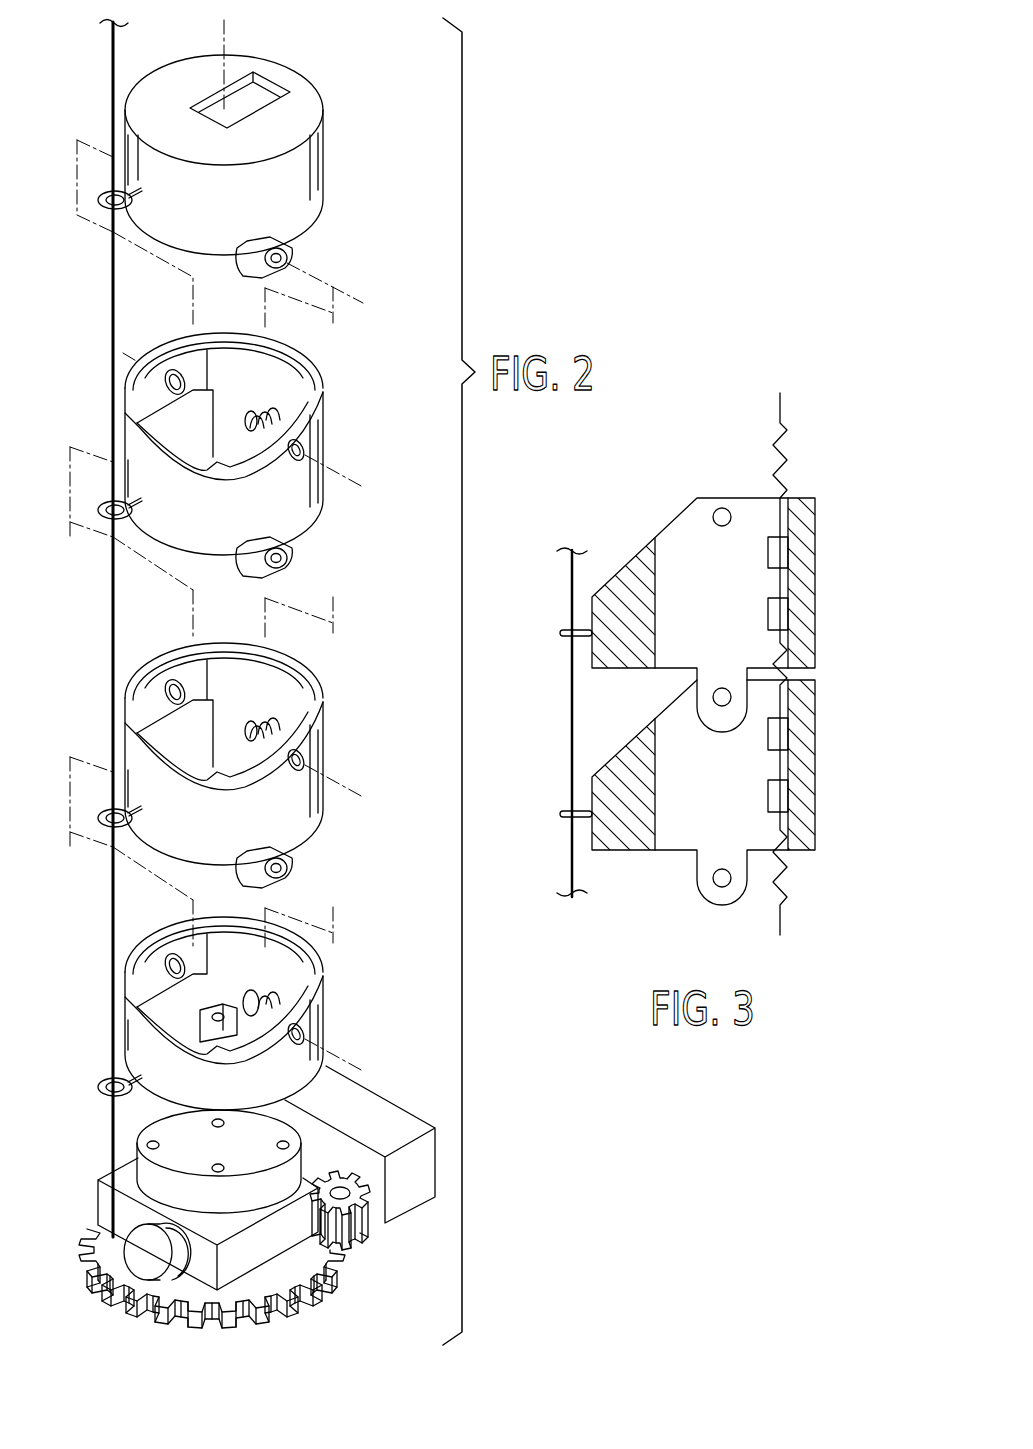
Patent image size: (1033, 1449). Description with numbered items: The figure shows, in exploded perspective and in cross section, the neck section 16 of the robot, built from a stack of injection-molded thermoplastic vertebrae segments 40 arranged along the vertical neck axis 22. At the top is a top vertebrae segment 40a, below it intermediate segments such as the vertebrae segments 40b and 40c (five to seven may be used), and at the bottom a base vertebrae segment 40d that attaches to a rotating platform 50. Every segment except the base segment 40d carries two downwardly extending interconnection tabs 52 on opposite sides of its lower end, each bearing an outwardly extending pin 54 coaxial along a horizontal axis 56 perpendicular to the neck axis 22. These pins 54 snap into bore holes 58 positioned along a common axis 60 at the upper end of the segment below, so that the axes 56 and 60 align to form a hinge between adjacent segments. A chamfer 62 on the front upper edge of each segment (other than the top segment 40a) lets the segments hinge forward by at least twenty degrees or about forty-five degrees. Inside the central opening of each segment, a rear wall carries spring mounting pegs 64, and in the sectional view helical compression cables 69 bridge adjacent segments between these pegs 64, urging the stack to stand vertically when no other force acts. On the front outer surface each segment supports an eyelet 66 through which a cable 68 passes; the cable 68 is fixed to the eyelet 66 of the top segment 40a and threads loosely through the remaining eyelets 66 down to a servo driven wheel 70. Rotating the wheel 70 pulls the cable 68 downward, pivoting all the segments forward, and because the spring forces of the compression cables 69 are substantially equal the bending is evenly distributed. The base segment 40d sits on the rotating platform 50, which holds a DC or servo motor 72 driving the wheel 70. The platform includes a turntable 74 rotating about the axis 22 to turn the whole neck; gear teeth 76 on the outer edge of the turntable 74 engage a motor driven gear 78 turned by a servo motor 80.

In FIG. 2, the neck section 16 is at (353, 210).
In FIG. 2, the neck axis 22 is at (224, 40).
In FIG. 3, the vertebrae segments 40 is at (805, 580).
In FIG. 2, the top vertebrae segment 40a is at (302, 177).
In FIG. 2, the intermediate vertebrae segment 40b is at (313, 430).
In FIG. 2, the intermediate vertebrae segment 40c is at (313, 740).
In FIG. 2, the base vertebrae segment 40d is at (308, 1027).
In FIG. 2, the rotating platform 50 is at (178, 1147).
In FIG. 2, the interconnection tabs 52 is at (293, 228).
In FIG. 2, the pins 54 is at (273, 248).
In FIG. 2, the horizontal axis 56 is at (353, 298).
In FIG. 2, the bore holes 58 is at (172, 372).
In FIG. 2, the common axis 60 is at (349, 477).
In FIG. 2, the chamfer 62 is at (108, 437).
In FIG. 2, the spring mounting pegs 64 is at (277, 407).
In FIG. 3, the spring mounting pegs 64 is at (768, 614).
In FIG. 2, the eyelet 66 is at (110, 213).
In FIG. 3, the eyelet 66 is at (556, 634).
In FIG. 2, the cable 68 is at (113, 603).
In FIG. 3, the cable 68 is at (573, 868).
In FIG. 3, the helical compression cables 69 is at (780, 412).
In FIG. 2, the servo driven wheel 70 is at (142, 1250).
In FIG. 2, the servo motor 72 is at (260, 1247).
In FIG. 2, the turntable 74 is at (300, 1255).
In FIG. 2, the gear teeth 76 is at (142, 1305).
In FIG. 2, the motor driven gear 78 is at (352, 1222).
In FIG. 2, the servo motor 80 is at (400, 1187).